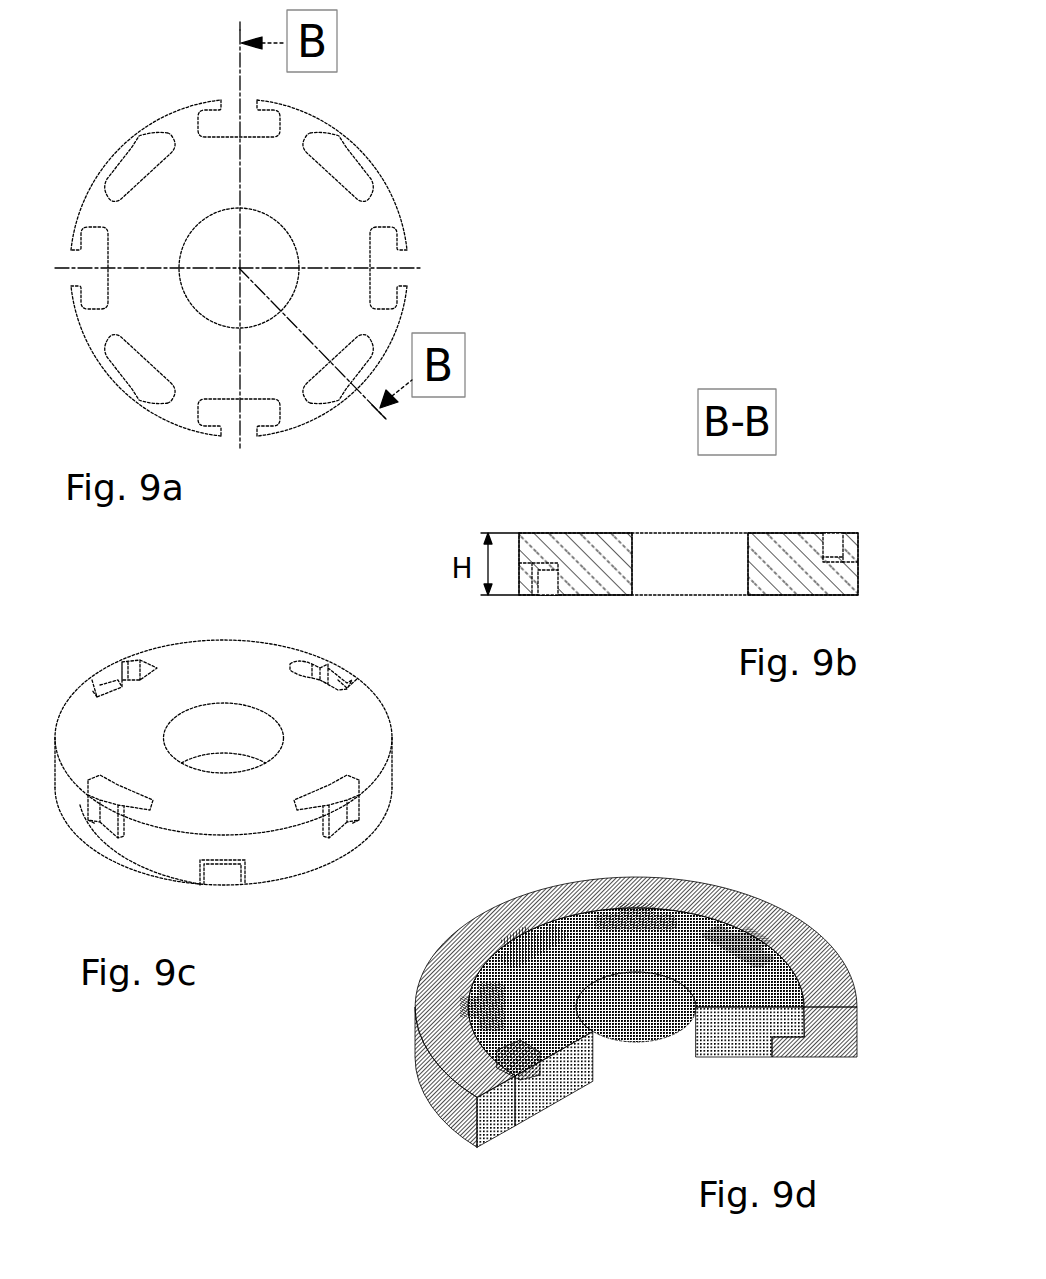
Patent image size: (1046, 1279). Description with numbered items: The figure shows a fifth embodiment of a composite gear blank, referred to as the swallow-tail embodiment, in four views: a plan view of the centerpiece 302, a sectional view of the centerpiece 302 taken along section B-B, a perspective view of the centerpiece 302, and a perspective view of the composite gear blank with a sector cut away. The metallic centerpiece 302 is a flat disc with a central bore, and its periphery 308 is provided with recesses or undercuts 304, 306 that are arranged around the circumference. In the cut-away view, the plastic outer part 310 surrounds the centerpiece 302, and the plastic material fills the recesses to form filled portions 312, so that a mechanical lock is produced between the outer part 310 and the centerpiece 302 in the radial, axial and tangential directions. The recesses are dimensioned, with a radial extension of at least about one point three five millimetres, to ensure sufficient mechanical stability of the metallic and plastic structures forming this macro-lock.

In FIG. 9a, the disc 302 is at (455, 183).
In FIG. 9b, the disc 302 is at (633, 487).
In FIG. 9c, the disc 302 is at (270, 621).
In FIG. 9d, the disc 302 is at (638, 935).
In FIG. 9a, the slot 304 is at (397, 257).
In FIG. 9b, the slot 304 is at (836, 543).
In FIG. 9c, the slot 304 is at (118, 685).
In FIG. 9a, the slot 306 is at (347, 160).
In FIG. 9b, the slot 306 is at (550, 577).
In FIG. 9c, the slot 306 is at (225, 872).
In FIG. 9a, the outer periphery 308 is at (165, 118).
In FIG. 9c, the outer periphery 308 is at (148, 850).
In FIG. 9d, the sleeve 310 is at (817, 950).
In FIG. 9d, the slot filling 312 is at (523, 1080).